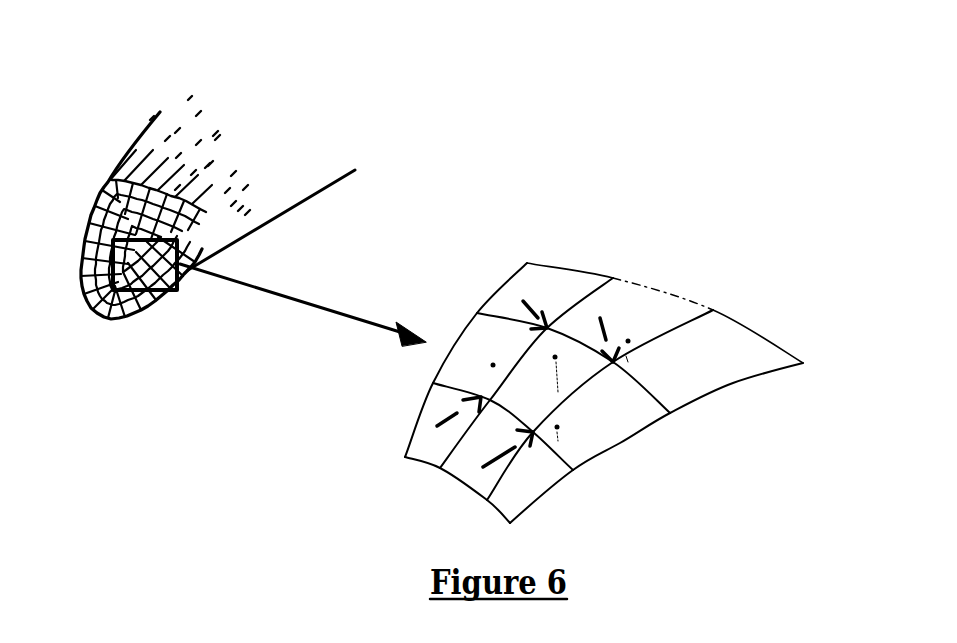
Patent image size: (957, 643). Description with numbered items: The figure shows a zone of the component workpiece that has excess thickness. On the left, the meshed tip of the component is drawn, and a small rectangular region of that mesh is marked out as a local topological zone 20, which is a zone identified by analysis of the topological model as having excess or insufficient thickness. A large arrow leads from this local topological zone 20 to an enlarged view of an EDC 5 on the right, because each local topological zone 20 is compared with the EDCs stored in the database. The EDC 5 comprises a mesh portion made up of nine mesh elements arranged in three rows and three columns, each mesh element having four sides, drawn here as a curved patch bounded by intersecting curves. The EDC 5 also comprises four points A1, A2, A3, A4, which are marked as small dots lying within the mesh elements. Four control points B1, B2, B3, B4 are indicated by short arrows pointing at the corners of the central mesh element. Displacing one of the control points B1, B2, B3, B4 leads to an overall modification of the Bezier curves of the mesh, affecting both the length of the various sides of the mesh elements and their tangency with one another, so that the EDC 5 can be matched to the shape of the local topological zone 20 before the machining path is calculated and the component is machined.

The local topological zone 20 is at (195, 252).
The EDC 5 is at (697, 267).
The point A1 is at (497, 353).
The point A2 is at (556, 361).
The point A3 is at (571, 421).
The point A4 is at (631, 339).
The control point B1 is at (446, 418).
The control point B2 is at (527, 307).
The control point B3 is at (604, 330).
The control point B4 is at (498, 456).